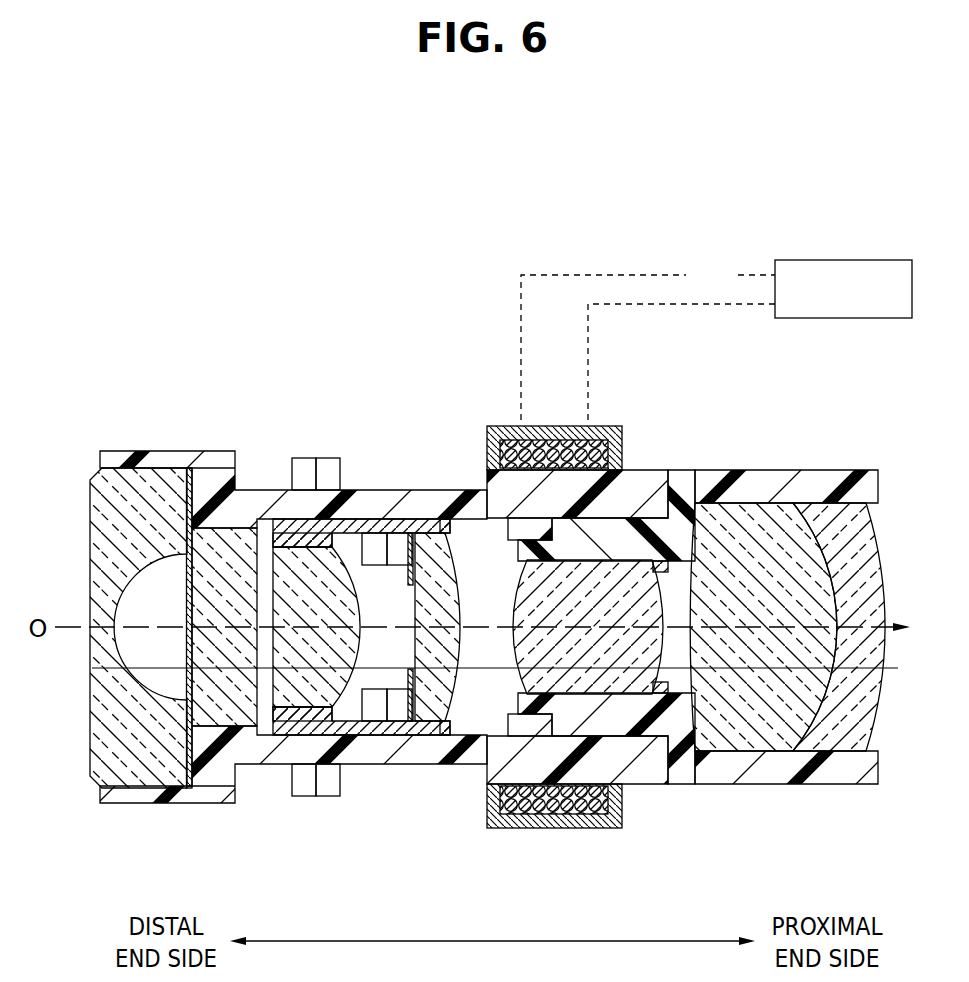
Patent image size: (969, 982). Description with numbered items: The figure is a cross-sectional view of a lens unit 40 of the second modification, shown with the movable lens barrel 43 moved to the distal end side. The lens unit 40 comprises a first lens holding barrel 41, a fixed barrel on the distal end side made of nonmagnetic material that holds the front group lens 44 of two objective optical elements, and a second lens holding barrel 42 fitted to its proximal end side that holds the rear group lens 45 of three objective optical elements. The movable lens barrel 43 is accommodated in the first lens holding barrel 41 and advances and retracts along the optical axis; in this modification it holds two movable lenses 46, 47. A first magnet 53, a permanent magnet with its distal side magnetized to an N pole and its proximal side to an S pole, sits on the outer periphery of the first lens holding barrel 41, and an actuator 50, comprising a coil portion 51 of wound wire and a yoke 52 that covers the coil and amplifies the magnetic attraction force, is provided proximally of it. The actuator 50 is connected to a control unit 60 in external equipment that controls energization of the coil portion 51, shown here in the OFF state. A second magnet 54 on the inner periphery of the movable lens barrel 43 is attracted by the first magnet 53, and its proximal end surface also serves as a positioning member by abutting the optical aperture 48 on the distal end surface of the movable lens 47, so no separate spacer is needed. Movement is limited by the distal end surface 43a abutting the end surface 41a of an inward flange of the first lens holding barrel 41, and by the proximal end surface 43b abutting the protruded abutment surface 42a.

The lens unit 40 is at (481, 382).
The first lens holding barrel 41 is at (167, 451).
The end surface 41a is at (290, 745).
The second lens holding barrel 42 is at (752, 470).
The abutment surface 42a is at (498, 732).
The movable lens barrel 43 is at (350, 519).
The distal end surface 43a is at (272, 722).
The proximal end surface 43b is at (442, 738).
The front group lens 44 is at (165, 670).
The rear group lens 45 is at (718, 668).
The movable lens 46 is at (343, 660).
The movable lens 47 is at (452, 658).
The optical aperture 48 is at (421, 558).
The actuator 50 is at (598, 412).
The coil portion 51 is at (568, 424).
The yoke 52 is at (540, 424).
The first magnet 53 is at (308, 458).
The second magnet 54 is at (391, 533).
The control unit 60 is at (848, 260).